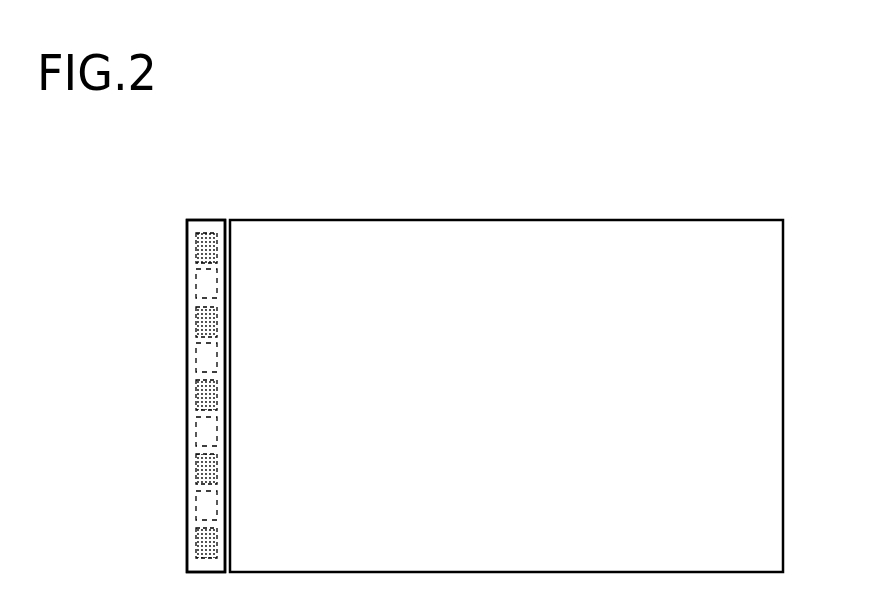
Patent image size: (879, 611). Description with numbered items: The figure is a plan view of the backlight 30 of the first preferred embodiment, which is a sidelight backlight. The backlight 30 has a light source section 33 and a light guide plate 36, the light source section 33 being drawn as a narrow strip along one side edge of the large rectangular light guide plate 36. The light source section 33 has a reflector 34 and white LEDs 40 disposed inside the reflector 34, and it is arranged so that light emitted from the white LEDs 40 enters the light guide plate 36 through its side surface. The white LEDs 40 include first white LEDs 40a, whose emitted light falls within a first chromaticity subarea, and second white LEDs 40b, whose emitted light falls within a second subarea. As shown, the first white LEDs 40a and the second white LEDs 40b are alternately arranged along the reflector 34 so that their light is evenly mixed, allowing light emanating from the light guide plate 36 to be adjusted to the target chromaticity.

The backlight 30 is at (426, 357).
The light source section 33 is at (205, 219).
The reflector 34 is at (190, 537).
The light guide plate 36 is at (330, 219).
The white LEDs 40 is at (129, 395).
The first white LED 40a is at (187, 433).
The second white LED 40b is at (187, 473).